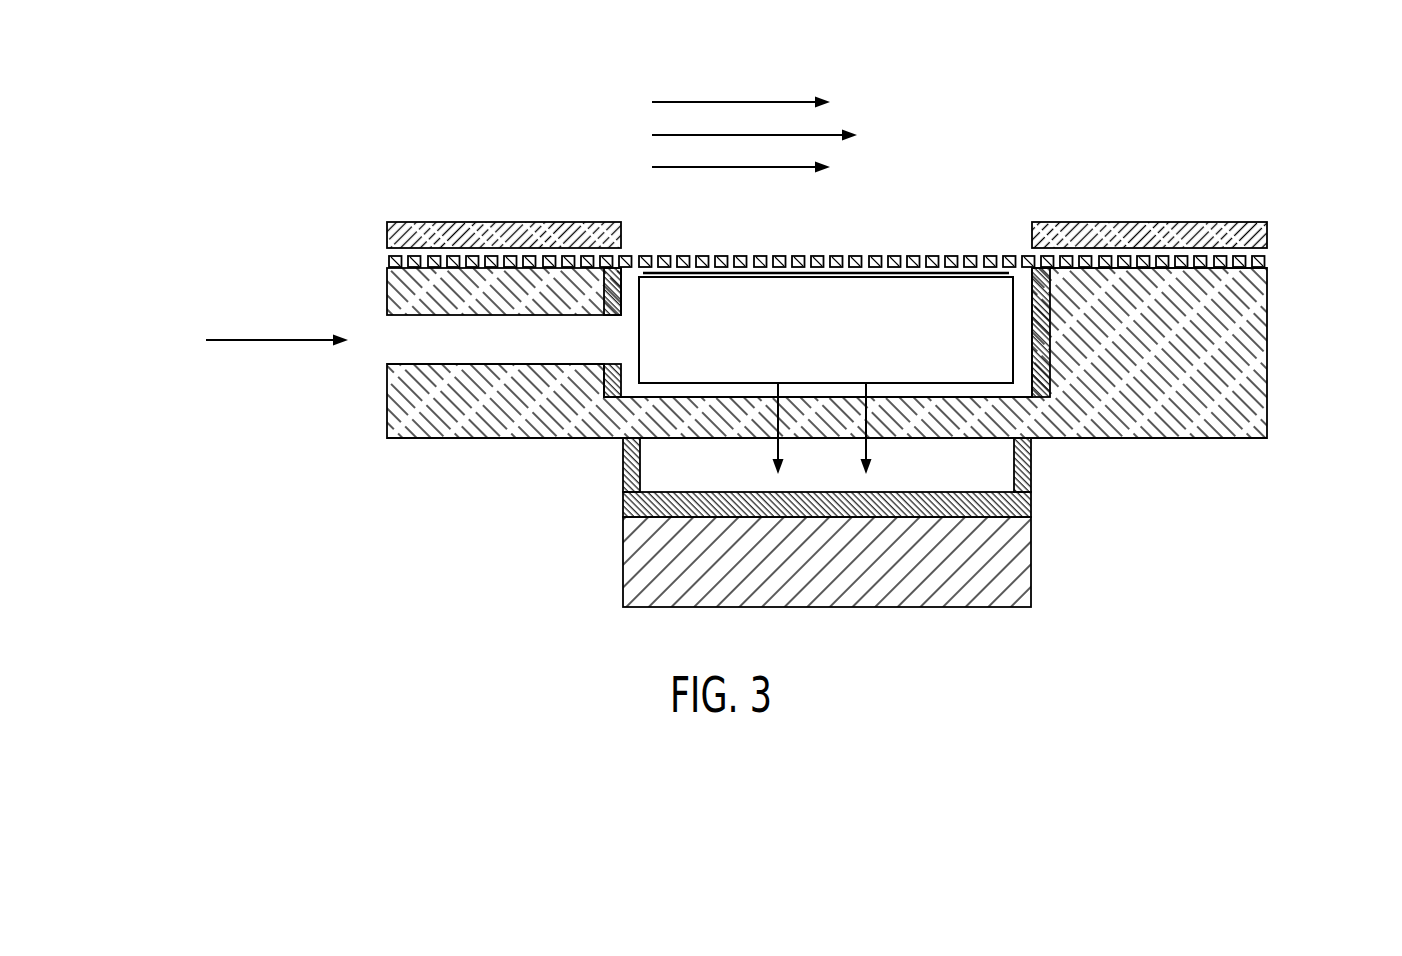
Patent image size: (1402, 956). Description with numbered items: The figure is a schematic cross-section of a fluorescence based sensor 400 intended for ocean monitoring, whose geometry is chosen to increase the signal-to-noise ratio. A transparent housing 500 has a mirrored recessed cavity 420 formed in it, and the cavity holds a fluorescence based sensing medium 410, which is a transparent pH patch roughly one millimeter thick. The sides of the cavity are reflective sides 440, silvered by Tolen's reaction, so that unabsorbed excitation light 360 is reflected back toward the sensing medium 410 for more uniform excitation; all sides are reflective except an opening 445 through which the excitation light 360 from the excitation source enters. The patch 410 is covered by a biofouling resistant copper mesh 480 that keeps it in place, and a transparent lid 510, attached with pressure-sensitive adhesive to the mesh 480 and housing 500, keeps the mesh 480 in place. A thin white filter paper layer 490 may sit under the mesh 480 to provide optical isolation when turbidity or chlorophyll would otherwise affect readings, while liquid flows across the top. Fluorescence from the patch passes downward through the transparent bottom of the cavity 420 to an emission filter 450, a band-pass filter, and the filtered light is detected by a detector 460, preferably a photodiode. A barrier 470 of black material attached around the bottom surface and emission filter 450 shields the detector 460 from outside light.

The sensor 400 is at (834, 60).
The excitation light 360 is at (264, 343).
The fluorescence based sensing medium 410 is at (941, 292).
The recessed cavity 420 is at (632, 283).
The reflective sides 440 is at (612, 317).
The opening 445 is at (360, 318).
The emission filter 450 is at (1031, 507).
The detector 460 is at (1024, 575).
The barrier 470 is at (622, 466).
The copper mesh 480 is at (893, 260).
The filter paper layer 490 is at (822, 271).
The housing 500 is at (1250, 354).
The lid 510 is at (414, 222).